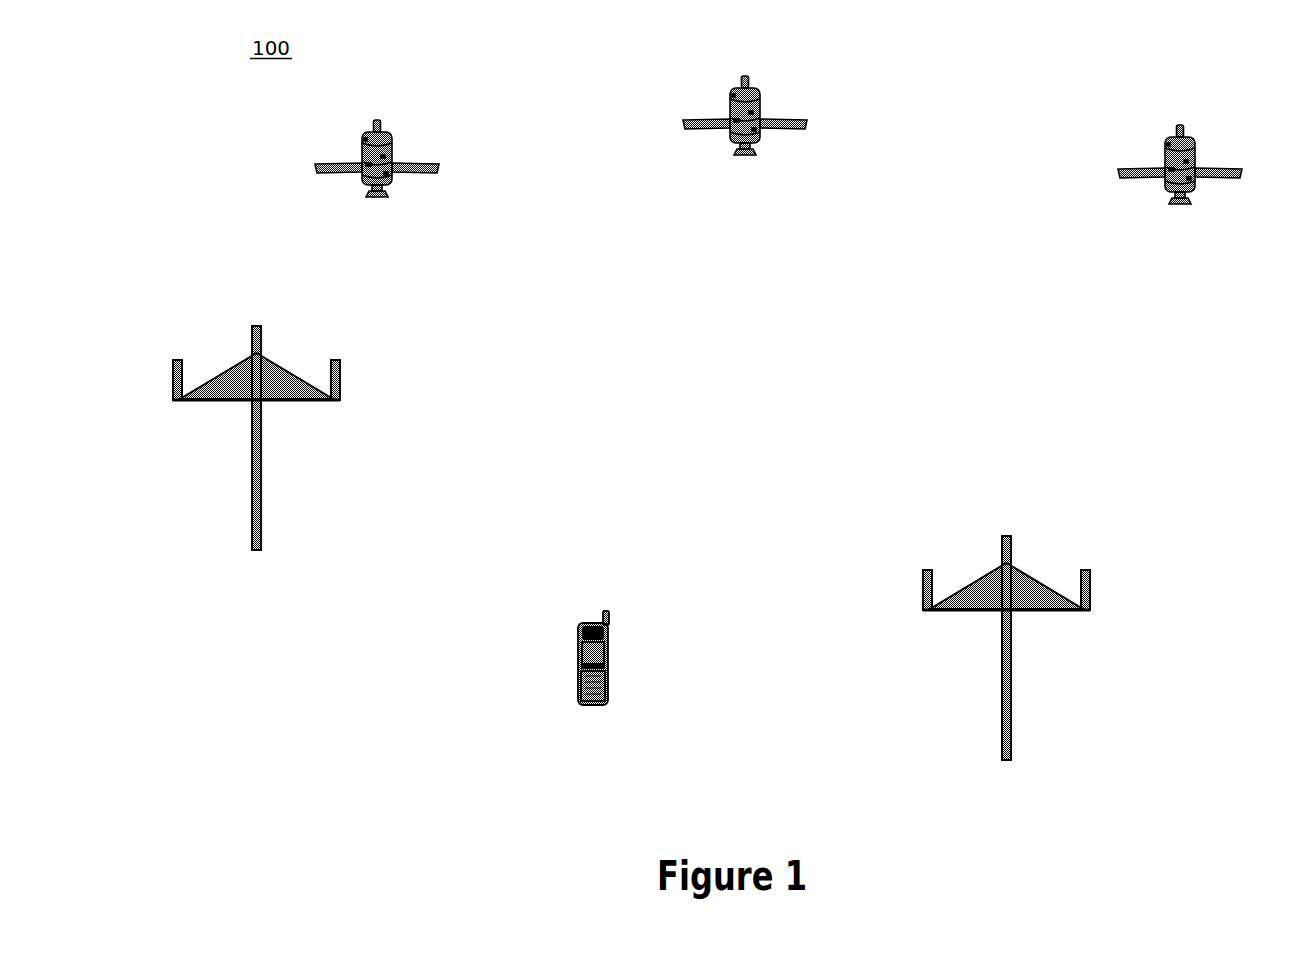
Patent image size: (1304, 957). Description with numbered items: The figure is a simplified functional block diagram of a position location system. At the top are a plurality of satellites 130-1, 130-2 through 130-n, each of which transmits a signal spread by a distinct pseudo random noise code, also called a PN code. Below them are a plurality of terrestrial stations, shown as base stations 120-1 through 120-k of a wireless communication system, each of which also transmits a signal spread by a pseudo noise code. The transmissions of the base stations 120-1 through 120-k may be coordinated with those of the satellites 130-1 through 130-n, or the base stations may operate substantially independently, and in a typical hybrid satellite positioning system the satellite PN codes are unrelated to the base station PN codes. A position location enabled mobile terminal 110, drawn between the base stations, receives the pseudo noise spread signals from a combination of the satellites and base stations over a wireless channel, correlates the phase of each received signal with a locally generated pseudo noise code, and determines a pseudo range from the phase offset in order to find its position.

The mobile terminal 110 is at (568, 655).
The base station 120-1 is at (300, 512).
The base station 120-k is at (1052, 717).
The satellite 130-1 is at (385, 112).
The satellite 130-2 is at (752, 70).
The satellite 130-n is at (1188, 120).